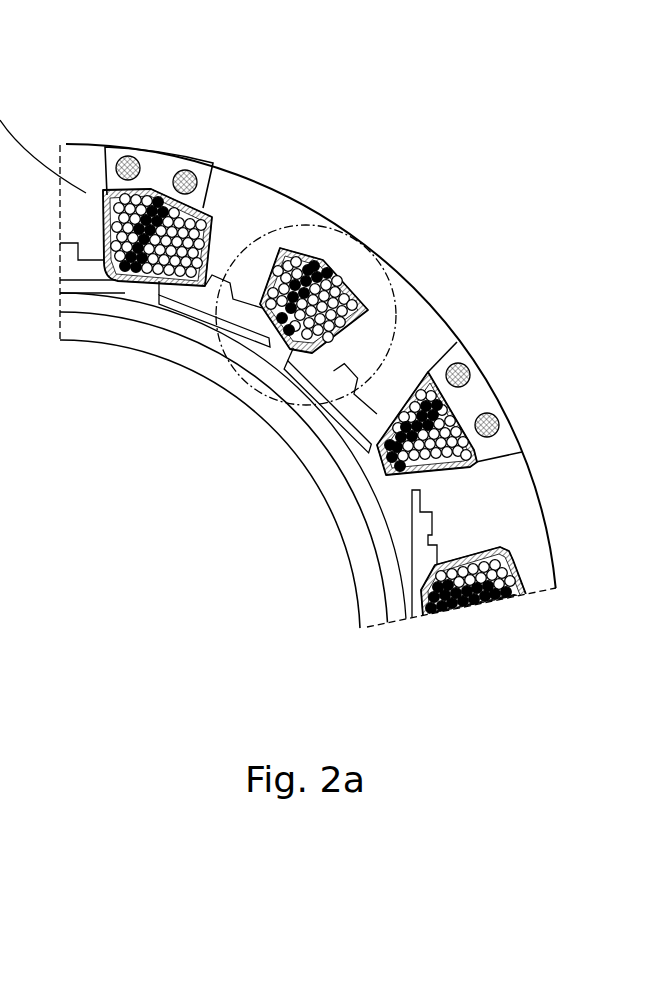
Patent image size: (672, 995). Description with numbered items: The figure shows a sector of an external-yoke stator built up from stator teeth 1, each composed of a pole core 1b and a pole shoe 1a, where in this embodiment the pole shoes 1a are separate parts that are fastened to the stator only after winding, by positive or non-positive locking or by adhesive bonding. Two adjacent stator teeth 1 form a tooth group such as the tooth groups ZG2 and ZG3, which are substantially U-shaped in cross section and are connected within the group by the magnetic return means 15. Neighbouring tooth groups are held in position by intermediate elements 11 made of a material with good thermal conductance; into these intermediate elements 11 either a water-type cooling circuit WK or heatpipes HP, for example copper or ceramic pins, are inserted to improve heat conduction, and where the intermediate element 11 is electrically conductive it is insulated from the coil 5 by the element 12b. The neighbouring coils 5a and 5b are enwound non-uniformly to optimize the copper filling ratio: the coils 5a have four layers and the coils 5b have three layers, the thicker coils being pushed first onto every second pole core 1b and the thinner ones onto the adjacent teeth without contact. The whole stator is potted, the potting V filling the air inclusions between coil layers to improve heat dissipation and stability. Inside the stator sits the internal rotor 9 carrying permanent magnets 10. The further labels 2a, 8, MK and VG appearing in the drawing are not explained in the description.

The stator tooth 1 is at (75, 160).
The pole shoe 1a is at (160, 340).
The pole core 1b is at (248, 374).
The rotor part 2a is at (100, 230).
The coil 5 is at (6, 605).
The coil 5a is at (100, 218).
The coil 5b is at (270, 240).
The coil module 8 is at (252, 212).
The internal rotor 9 is at (165, 340).
The permanent magnets 10 is at (73, 338).
The intermediate element 11 is at (152, 165).
The insulating element 12b is at (107, 165).
The magnetic return means 15 is at (307, 215).
The heatpipes HP is at (462, 364).
The magnetic circuit MK is at (327, 237).
The potting V is at (167, 187).
The connection gap VG is at (113, 337).
The water-type cooling circuit WK is at (190, 168).
The tooth group ZG2 is at (412, 322).
The tooth group ZG3 is at (538, 541).